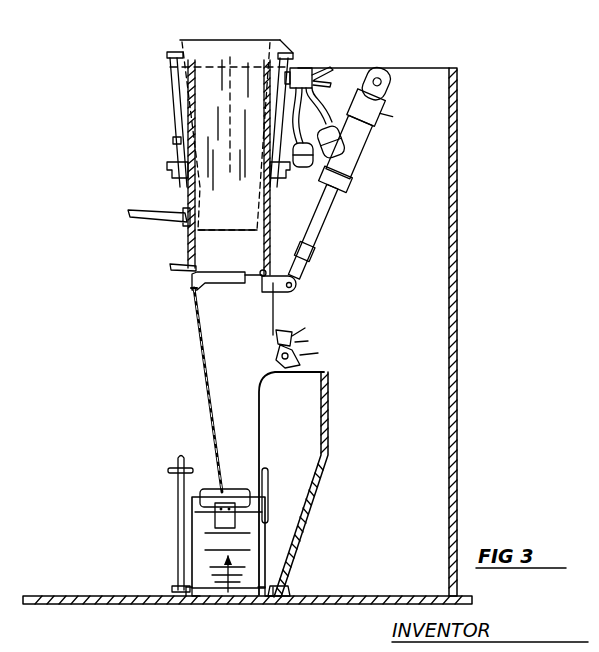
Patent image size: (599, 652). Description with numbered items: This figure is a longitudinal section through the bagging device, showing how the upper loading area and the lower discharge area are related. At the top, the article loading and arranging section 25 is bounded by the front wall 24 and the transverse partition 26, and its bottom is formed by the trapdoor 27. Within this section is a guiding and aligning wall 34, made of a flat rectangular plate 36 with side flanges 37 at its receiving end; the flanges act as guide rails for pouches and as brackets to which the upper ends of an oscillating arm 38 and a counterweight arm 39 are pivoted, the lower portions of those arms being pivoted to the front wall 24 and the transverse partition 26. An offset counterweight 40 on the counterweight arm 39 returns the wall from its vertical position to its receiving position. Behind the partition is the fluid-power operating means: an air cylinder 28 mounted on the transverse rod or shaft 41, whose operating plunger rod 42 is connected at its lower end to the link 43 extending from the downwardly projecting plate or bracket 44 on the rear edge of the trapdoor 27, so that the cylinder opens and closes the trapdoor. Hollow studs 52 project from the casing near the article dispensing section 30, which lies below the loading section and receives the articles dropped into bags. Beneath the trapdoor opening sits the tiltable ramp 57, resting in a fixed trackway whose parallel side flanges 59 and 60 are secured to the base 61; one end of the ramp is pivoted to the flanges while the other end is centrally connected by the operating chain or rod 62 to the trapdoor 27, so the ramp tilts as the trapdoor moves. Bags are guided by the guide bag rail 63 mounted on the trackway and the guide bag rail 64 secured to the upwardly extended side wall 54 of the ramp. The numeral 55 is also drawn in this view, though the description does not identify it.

The front wall 24 is at (455, 268).
The article loading and arranging section 25 is at (218, 243).
The transverse partition 26 is at (271, 198).
The trapdoor 27 is at (246, 284).
The air cylinder 28 is at (352, 160).
The article dispensing section 30 is at (234, 352).
The guiding and aligning wall 34 is at (216, 103).
The flat rectangular plate 36 is at (218, 145).
The side flanges 37 is at (292, 46).
The oscillating arm 38 is at (168, 66).
The counterweight arm 39 is at (298, 70).
The offset counterweight 40 is at (338, 137).
The transverse rod or shaft 41 is at (380, 84).
The operating plunger rod 42 is at (322, 216).
The link 43 is at (295, 290).
The downwardly projecting plate or bracket 44 is at (266, 272).
The hollow studs 52 is at (170, 268).
The upwardly extended side wall 54 is at (262, 395).
The container 55 is at (196, 527).
The ramp 57 is at (230, 600).
The side flange 59 is at (188, 600).
The side flange 60 is at (288, 590).
The base 61 is at (362, 600).
The operating chain or rod 62 is at (190, 312).
The guide bag rail 63 is at (178, 490).
The guide bag rail 64 is at (267, 485).